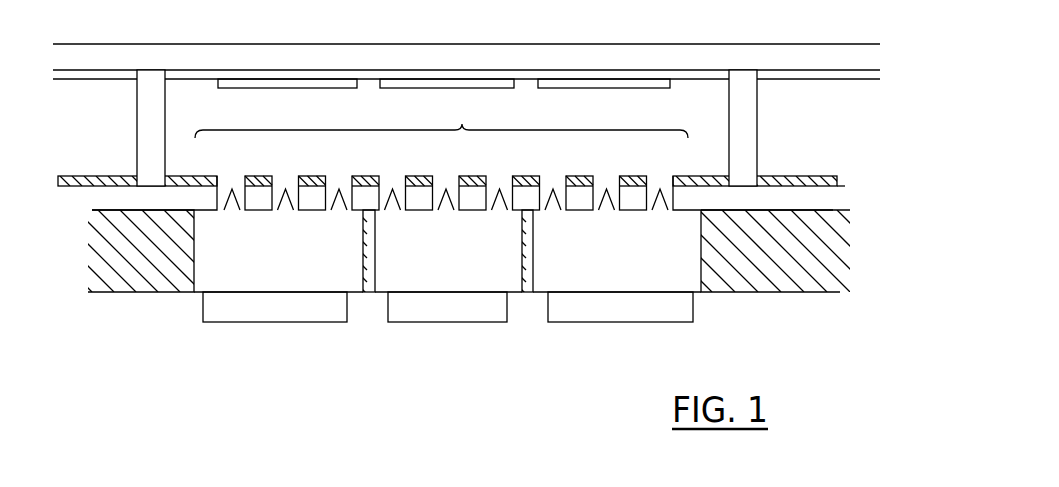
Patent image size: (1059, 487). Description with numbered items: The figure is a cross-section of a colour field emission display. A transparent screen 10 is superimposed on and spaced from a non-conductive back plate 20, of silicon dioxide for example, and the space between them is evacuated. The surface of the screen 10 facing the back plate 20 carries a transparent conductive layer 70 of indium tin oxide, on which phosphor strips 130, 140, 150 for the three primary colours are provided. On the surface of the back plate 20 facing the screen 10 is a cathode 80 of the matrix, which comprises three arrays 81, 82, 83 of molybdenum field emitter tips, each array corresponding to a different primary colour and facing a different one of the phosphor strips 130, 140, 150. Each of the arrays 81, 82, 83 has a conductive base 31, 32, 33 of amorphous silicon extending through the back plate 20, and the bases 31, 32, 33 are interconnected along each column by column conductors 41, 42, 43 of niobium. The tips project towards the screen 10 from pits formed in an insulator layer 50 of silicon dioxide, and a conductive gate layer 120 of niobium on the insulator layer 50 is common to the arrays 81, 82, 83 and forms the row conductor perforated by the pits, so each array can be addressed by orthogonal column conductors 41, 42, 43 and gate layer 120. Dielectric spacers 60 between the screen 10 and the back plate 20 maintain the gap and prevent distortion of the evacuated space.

The transparent screen 10 is at (803, 60).
The back plate 20 is at (800, 277).
The conductive base 31 is at (327, 283).
The conductive base 32 is at (498, 278).
The conductive base 33 is at (678, 278).
The column conductor 41 is at (240, 310).
The column conductor 42 is at (436, 310).
The column conductor 43 is at (604, 310).
The insulator layer 50 is at (813, 196).
The dielectric spacer 60 is at (800, 122).
The transparent conductive layer 70 is at (846, 78).
The cathode 80 is at (441, 157).
The array of field emitter tips 81 is at (338, 212).
The array of field emitter tips 82 is at (499, 212).
The array of field emitter tips 83 is at (660, 212).
The conductive gate layer 120 is at (703, 176).
The phosphor strip 130 is at (255, 83).
The phosphor strip 140 is at (418, 83).
The phosphor strip 150 is at (580, 83).